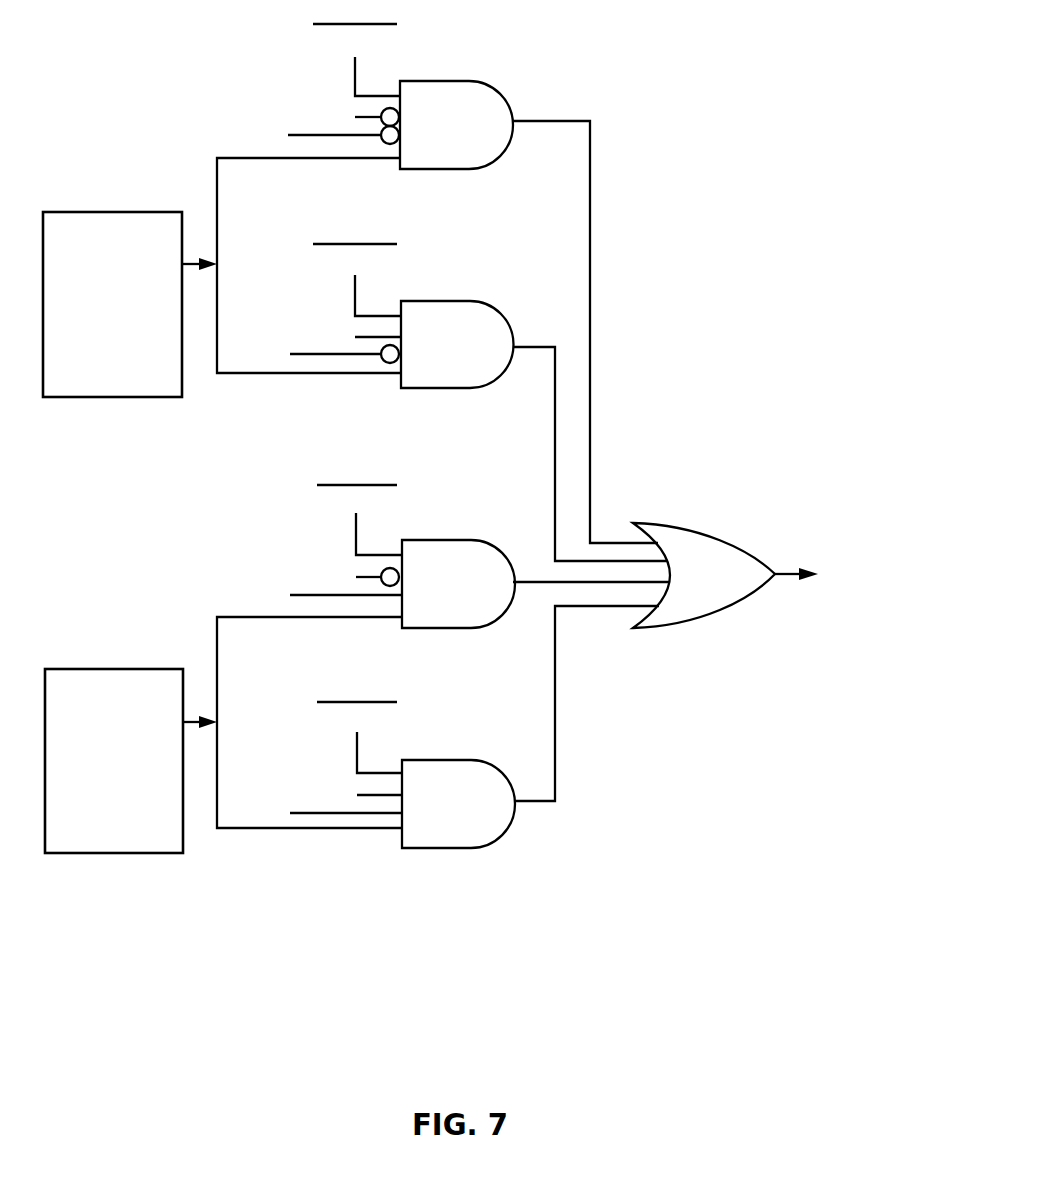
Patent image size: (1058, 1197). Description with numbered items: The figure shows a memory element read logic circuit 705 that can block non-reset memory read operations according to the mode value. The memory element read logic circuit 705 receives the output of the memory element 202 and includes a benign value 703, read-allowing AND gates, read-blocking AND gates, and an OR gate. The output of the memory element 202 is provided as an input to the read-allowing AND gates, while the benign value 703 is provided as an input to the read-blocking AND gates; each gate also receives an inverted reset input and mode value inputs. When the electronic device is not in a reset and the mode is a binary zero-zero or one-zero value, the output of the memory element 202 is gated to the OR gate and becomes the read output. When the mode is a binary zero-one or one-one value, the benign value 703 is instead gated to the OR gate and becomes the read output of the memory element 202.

The memory element 202 is at (112, 212).
The benign value 703 is at (115, 853).
The memory element read logic circuit 705 is at (652, 927).